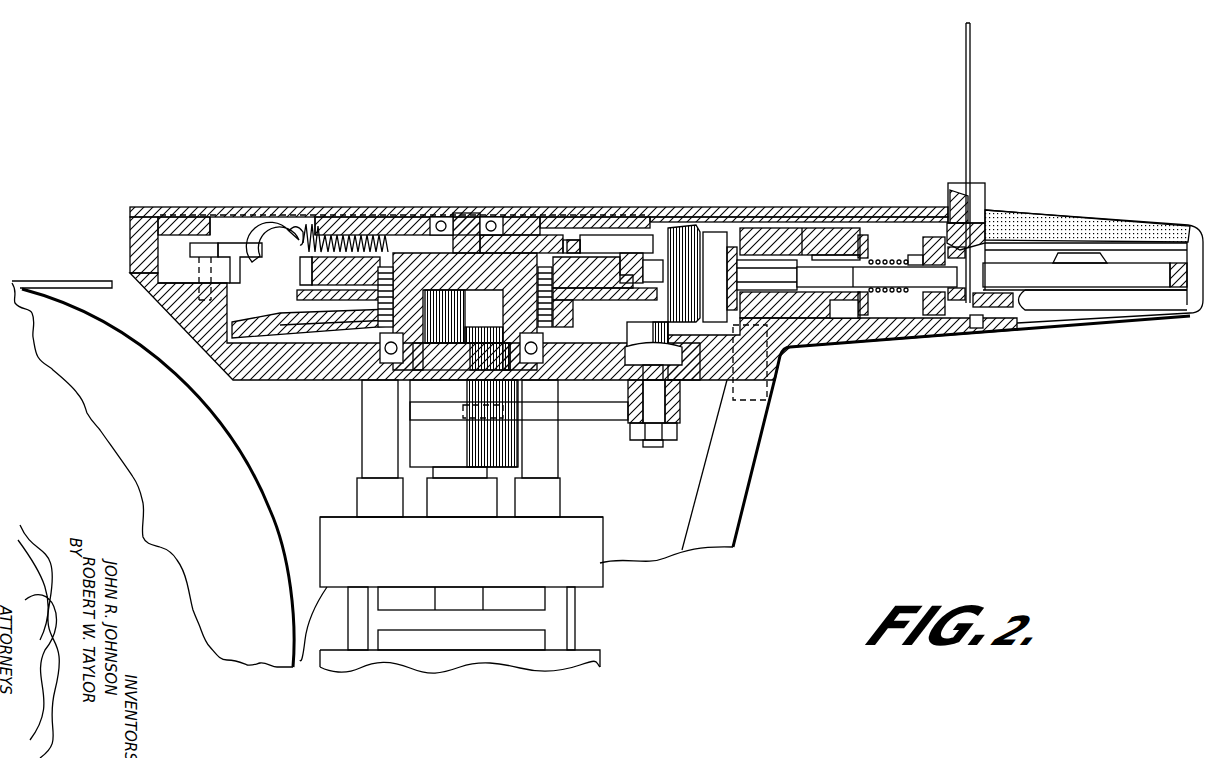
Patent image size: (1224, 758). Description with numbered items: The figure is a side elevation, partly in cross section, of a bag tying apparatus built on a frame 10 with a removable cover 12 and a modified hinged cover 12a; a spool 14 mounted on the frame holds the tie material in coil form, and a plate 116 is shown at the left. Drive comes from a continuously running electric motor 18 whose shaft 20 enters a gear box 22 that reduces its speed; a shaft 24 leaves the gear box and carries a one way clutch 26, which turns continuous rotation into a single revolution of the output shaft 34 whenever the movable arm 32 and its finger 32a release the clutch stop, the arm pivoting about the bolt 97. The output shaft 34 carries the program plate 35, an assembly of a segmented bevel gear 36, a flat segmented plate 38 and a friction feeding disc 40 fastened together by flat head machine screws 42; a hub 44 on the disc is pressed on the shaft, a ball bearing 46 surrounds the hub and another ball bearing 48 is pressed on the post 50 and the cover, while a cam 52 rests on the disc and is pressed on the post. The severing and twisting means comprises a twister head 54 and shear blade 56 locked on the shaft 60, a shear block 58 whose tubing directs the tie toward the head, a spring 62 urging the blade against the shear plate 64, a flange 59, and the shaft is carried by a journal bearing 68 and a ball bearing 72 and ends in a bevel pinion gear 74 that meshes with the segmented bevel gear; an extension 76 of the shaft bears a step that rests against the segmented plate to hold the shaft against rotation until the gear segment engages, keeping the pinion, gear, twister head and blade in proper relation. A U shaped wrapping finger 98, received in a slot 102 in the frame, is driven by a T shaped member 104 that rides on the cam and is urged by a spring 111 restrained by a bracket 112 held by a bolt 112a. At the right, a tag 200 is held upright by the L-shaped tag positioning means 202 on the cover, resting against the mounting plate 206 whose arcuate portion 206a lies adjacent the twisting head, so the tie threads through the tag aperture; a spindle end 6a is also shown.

The frame 10 is at (748, 515).
The removable cover 12 is at (727, 208).
The cover 12a is at (1094, 228).
The spool 14 is at (128, 438).
The plate 116 is at (104, 281).
The electric motor 18 is at (580, 657).
The motor output shaft 20 is at (450, 600).
The gear box 22 is at (578, 530).
The shaft 24 is at (476, 495).
The one way clutch 26 is at (410, 436).
The movable arm 32 is at (567, 423).
The finger 32a is at (478, 420).
The output shaft 34 is at (503, 347).
The program plate 35 is at (401, 248).
The segmented bevel gear 36 is at (262, 328).
The flat segmented plate 38 is at (617, 297).
The friction feeding disc 40 is at (602, 240).
The flat head machine screws 42 is at (382, 265).
The hub 44 is at (500, 298).
The ball bearing 46 is at (383, 352).
The ball bearing 48 is at (493, 225).
The post 50 is at (466, 222).
The cam 52 is at (560, 250).
The twister head 54 is at (913, 298).
The shear blade 56 is at (892, 225).
The shear block 58 is at (770, 232).
The sleeve flange 59 is at (832, 229).
The shaft 60 is at (800, 252).
The spring 62 is at (887, 290).
The shear plate 64 is at (864, 236).
The journal bearing 68 is at (835, 320).
The ball bearing 72 is at (738, 250).
The bevel pinion gear 74 is at (687, 300).
The extension 76 is at (675, 245).
The bolt 97 is at (580, 421).
The wrapping finger 98 is at (1007, 310).
The slot 102 is at (1037, 315).
The T shaped member 104 is at (635, 235).
The spring 111 is at (297, 255).
The bracket 112 is at (243, 248).
The bolt 112a is at (205, 243).
The tag 200 is at (972, 48).
The tag positioning means 202 is at (985, 185).
The mounting plate 206 is at (1156, 258).
The arcuate portion 206a is at (955, 215).
The spindle end 6a is at (940, 285).